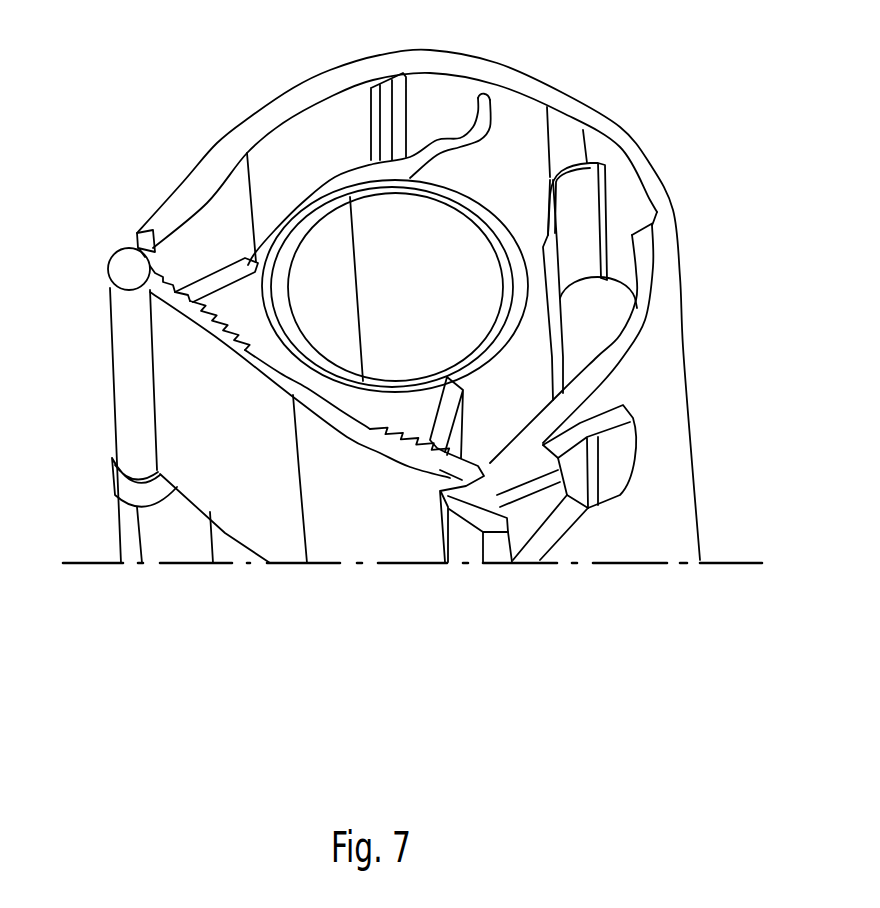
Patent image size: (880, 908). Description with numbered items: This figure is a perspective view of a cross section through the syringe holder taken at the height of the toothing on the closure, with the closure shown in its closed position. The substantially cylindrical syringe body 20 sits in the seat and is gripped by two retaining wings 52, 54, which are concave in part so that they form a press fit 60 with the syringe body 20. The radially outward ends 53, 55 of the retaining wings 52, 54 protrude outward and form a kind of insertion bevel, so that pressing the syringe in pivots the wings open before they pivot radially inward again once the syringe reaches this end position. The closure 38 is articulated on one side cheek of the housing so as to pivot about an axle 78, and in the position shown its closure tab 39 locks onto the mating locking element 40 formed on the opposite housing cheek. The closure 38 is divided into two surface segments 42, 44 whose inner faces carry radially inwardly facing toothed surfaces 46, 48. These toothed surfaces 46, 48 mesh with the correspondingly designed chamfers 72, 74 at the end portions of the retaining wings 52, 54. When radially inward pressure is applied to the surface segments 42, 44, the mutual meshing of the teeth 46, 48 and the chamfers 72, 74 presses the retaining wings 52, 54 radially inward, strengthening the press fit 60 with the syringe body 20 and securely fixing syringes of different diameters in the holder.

The syringe body 20 is at (468, 203).
The closure 38 is at (258, 542).
The closure tab 39 is at (615, 465).
The mating locking element 40 is at (533, 463).
The surface segment 42 is at (352, 530).
The surface segment 44 is at (200, 487).
The toothed surface 46 is at (397, 442).
The toothed surface 48 is at (200, 330).
The retaining wing 52 is at (513, 333).
The radially outward end 53 is at (443, 417).
The retaining wing 54 is at (301, 205).
The radially outward end 55 is at (227, 277).
The press fit 60 is at (537, 282).
The chamfer 72 is at (432, 453).
The chamfer 74 is at (177, 290).
The axle 78 is at (125, 273).